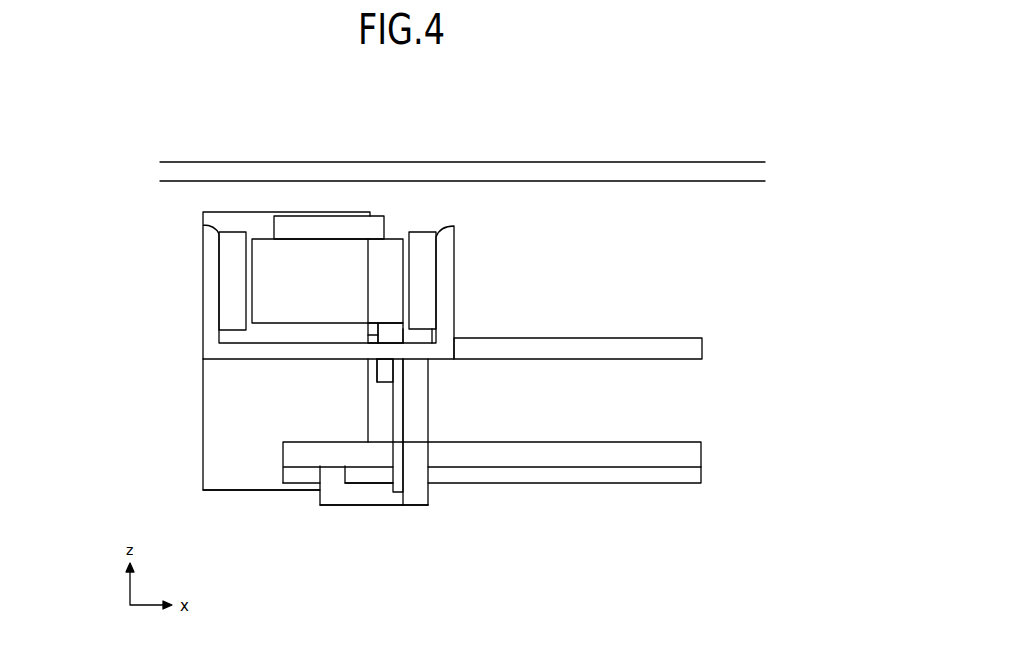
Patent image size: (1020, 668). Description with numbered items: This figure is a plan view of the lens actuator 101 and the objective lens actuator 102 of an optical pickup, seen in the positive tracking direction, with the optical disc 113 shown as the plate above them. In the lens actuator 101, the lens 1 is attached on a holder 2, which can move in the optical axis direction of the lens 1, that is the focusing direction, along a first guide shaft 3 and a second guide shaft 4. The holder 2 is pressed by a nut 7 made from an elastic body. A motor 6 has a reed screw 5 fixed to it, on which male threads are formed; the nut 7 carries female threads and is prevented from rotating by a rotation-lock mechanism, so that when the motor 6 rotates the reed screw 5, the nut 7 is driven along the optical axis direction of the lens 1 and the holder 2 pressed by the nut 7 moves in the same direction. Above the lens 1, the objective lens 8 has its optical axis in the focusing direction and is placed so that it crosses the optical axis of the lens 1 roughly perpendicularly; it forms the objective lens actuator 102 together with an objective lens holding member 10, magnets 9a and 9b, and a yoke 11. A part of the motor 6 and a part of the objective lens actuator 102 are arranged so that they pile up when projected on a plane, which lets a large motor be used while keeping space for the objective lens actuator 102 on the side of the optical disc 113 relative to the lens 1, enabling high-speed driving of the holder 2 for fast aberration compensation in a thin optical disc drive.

The lens 1 is at (398, 483).
The holder 2 is at (418, 483).
The first guide shaft 3 is at (680, 473).
The second guide shaft 4 is at (687, 455).
The reed screw 5 is at (570, 348).
The motor 6 is at (222, 403).
The nut 7 is at (385, 370).
The objective lens 8 is at (340, 223).
The magnet 9a is at (232, 240).
The magnet 9b is at (420, 280).
The objective lens holding member 10 is at (306, 264).
The yoke 11 is at (440, 328).
The lens actuator 101 is at (460, 508).
The objective lens actuator 102 is at (170, 293).
The optical disc 113 is at (587, 173).